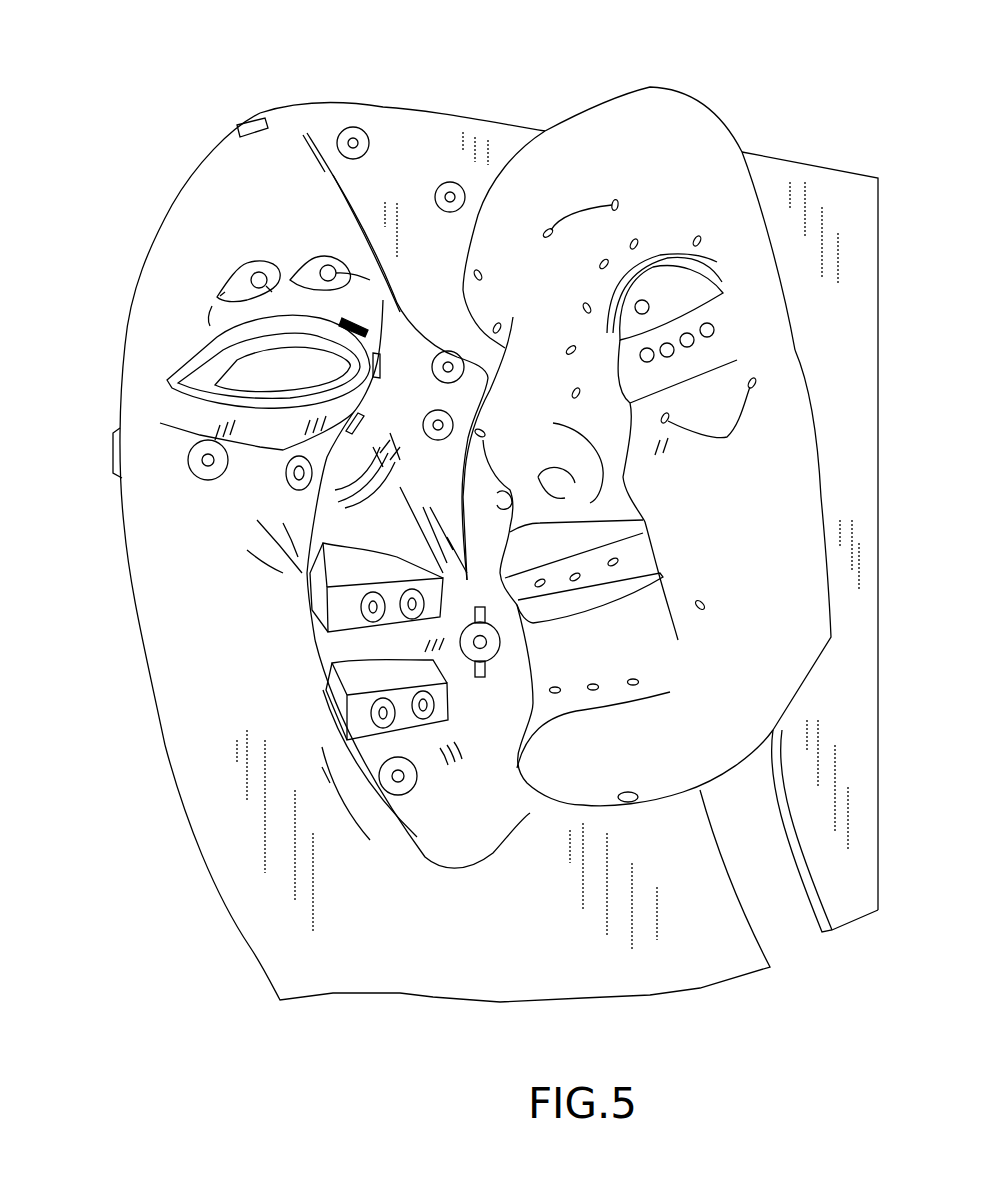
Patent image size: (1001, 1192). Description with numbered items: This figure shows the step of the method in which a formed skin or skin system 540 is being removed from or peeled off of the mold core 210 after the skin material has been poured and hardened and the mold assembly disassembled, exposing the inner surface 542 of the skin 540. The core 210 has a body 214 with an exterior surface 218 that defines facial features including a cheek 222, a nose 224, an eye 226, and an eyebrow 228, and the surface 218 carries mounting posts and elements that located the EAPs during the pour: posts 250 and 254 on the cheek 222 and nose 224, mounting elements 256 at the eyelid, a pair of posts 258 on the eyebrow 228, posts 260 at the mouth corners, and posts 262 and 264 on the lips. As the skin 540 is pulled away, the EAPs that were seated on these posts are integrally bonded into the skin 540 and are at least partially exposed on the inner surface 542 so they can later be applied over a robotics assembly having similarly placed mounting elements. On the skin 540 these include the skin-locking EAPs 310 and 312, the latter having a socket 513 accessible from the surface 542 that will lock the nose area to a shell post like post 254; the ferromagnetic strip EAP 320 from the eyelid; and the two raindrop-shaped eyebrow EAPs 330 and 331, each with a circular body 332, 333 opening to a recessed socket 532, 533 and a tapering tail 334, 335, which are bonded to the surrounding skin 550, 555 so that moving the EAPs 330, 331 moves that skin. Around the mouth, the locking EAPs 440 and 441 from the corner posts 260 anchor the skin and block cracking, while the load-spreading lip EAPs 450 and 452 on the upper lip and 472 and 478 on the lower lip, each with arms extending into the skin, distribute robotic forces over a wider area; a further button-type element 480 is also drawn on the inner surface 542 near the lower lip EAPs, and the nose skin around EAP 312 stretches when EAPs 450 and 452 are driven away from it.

The mold core 210 is at (670, 469).
The body 214 is at (816, 470).
The exterior surface 218 is at (810, 553).
The cheek 222 is at (802, 447).
The nose 224 is at (536, 410).
The eye 226 is at (741, 298).
The eyebrow 228 is at (718, 147).
The mounting post 250 is at (709, 423).
The mounting post 254 is at (486, 435).
The mounting elements 256 is at (694, 339).
The EAP mounting posts 258 is at (619, 203).
The mounting posts 260 is at (705, 609).
The mounting posts 262 is at (640, 682).
The mounting post 264 is at (617, 560).
The skin-locking EAP 310 is at (287, 482).
The skin-locking EAP 312 is at (426, 418).
The EAP 320 is at (217, 400).
The EAP 330 is at (358, 243).
The EAP 331 is at (237, 248).
The circular body 332 is at (344, 286).
The circular body 333 is at (263, 263).
The tail 334 is at (291, 278).
The tail 335 is at (235, 290).
The locking EAP 440 is at (308, 676).
The locking EAP 441 is at (517, 641).
The load-spreading EAP 450 is at (455, 595).
The load-spreading EAP 452 is at (374, 572).
The load-spreading EAP 472 is at (447, 733).
The load-spreading EAP 478 is at (373, 750).
The fastener 480 is at (407, 788).
The socket 513 is at (437, 439).
The socket 532 is at (370, 280).
The socket 533 is at (272, 292).
The skin 540 is at (407, 504).
The inner surface 542 is at (165, 238).
The surrounding skin 550 is at (214, 316).
The surrounding skin 555 is at (287, 245).